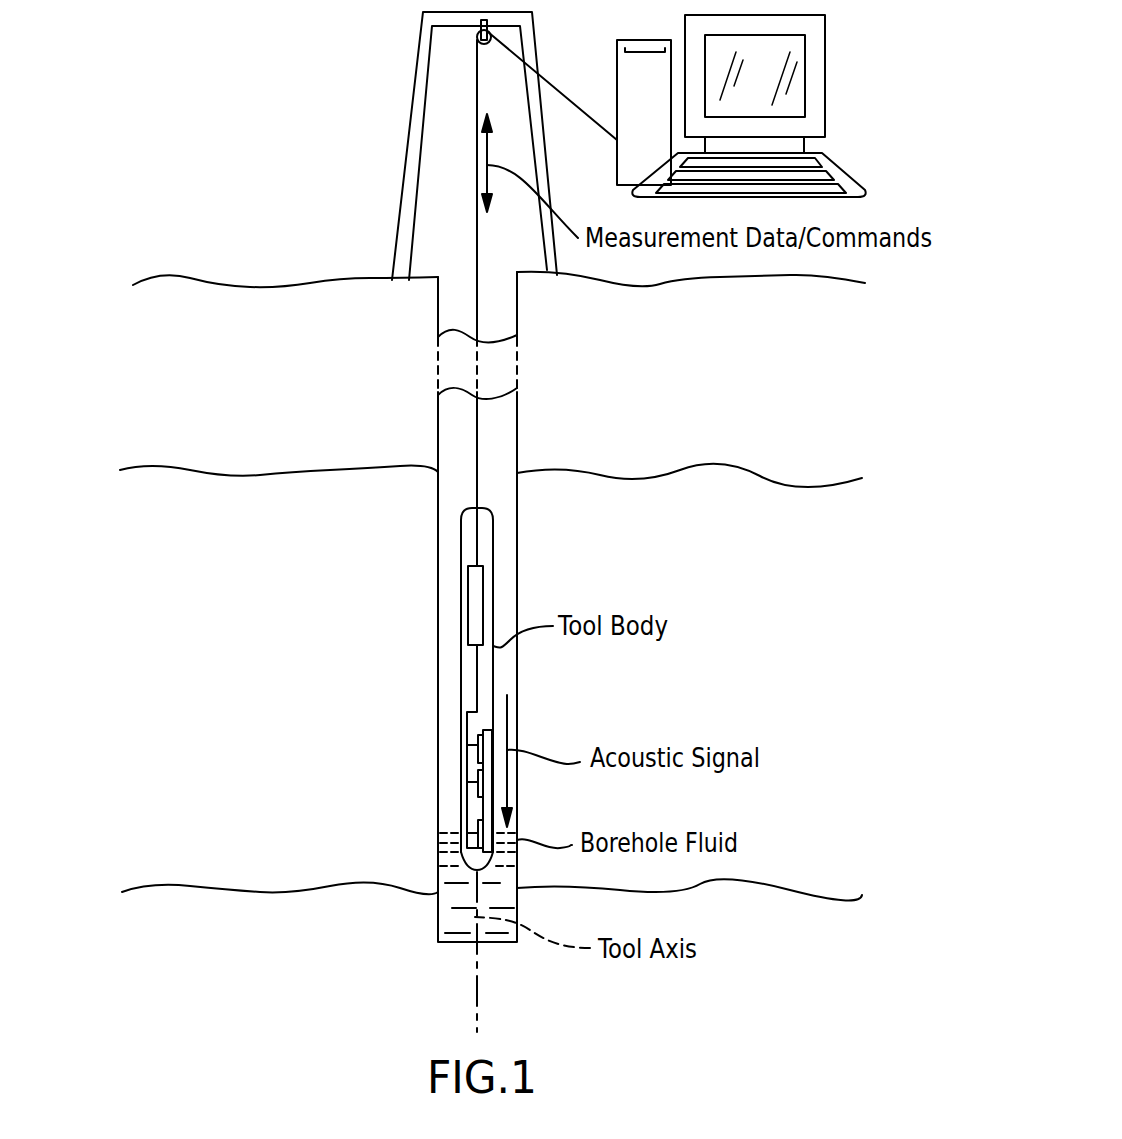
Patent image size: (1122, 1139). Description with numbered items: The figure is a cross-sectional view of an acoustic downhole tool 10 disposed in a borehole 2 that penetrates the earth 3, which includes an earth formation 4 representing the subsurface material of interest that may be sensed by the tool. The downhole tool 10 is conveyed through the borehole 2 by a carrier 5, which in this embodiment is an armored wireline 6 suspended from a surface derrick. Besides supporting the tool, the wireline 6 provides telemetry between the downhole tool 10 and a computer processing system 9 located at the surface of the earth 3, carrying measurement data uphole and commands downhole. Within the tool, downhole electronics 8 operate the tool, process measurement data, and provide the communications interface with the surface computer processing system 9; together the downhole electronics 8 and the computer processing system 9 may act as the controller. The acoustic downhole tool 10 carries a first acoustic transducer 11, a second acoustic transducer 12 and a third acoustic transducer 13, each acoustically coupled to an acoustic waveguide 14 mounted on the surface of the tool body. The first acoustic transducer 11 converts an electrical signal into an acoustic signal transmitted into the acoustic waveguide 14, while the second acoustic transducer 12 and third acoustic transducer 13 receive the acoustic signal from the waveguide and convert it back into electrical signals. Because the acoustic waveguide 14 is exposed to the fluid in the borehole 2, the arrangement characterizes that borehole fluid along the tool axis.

The borehole 2 is at (438, 297).
The earth 3 is at (744, 347).
The earth formation 4 is at (848, 541).
The carrier 5 is at (477, 425).
The armored wireline 6 is at (477, 247).
The downhole electronics 8 is at (476, 590).
The computer processing system 9 is at (617, 70).
The acoustic downhole tool 10 is at (461, 541).
The first acoustic transducer 11 is at (478, 742).
The second acoustic transducer 12 is at (478, 780).
The third acoustic transducer 13 is at (478, 830).
The acoustic waveguide 14 is at (495, 737).